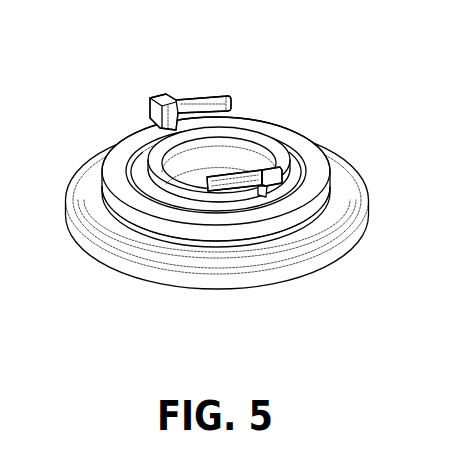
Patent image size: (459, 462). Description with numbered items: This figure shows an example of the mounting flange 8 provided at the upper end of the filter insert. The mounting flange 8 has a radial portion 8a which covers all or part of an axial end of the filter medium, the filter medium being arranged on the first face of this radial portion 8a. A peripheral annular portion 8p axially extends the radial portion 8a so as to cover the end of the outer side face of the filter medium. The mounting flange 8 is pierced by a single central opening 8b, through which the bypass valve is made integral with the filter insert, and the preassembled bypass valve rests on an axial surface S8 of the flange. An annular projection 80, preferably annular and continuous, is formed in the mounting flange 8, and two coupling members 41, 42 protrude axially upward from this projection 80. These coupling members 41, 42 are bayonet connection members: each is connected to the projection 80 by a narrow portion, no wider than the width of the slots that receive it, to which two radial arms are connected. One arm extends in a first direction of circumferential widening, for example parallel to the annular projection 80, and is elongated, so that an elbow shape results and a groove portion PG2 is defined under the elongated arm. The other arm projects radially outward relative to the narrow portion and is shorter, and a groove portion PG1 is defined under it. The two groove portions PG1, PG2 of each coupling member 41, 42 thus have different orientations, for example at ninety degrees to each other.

The mounting flange 8 is at (203, 196).
The peripheral annular portion 8p is at (92, 247).
The radial portion 8a is at (203, 184).
The opening 8b is at (170, 180).
The axial surface S8 is at (252, 126).
The annular projection 80 is at (293, 194).
The coupling member 41 is at (243, 192).
The coupling member 42 is at (143, 107).
The groove portion PG1 is at (157, 123).
The groove portion PG2 is at (190, 113).